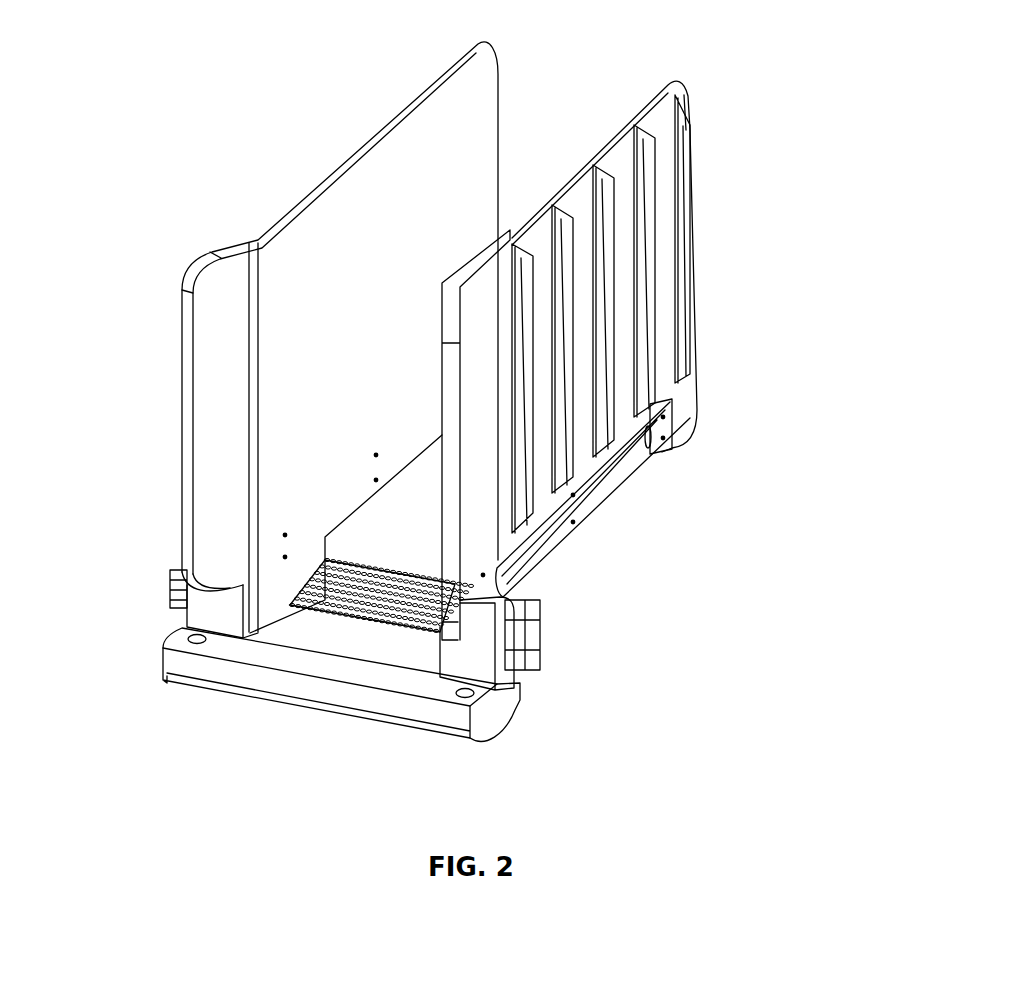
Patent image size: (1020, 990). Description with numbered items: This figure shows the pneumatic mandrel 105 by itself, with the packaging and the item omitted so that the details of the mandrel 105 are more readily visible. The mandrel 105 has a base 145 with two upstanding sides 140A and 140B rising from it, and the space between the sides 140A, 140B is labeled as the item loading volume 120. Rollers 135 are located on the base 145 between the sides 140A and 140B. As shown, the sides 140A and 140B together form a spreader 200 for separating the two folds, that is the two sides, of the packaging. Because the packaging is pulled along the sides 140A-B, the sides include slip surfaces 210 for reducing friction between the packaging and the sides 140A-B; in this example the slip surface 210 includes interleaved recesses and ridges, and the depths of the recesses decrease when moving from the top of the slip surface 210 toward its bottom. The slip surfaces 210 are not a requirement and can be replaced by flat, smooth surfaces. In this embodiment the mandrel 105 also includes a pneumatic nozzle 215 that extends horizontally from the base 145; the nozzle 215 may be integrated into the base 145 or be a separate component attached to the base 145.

The pneumatic mandrel 105 is at (239, 228).
The item loading volume 120 is at (431, 461).
The rollers 135 is at (362, 618).
The side 140A is at (188, 360).
The side 140B is at (695, 288).
The base 145 is at (470, 740).
The spreader 200 is at (483, 102).
The slip surface 210 is at (667, 203).
The pneumatic nozzle 215 is at (440, 552).